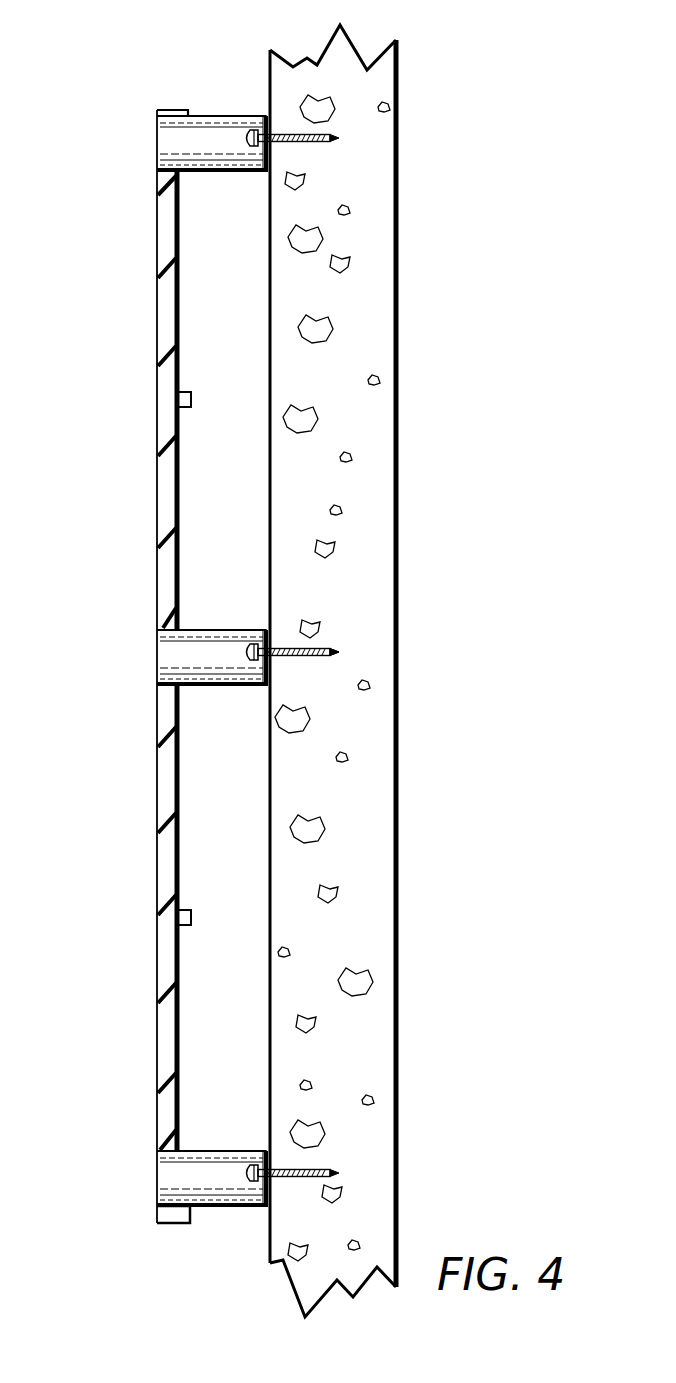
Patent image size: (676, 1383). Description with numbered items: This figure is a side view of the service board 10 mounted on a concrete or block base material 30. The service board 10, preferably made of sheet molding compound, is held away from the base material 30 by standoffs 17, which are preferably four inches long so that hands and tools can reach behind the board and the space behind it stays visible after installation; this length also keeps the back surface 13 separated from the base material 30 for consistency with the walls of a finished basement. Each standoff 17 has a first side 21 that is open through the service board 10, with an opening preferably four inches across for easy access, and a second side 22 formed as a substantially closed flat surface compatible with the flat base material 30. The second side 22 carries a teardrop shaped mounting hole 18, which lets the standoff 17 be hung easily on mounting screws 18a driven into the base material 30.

The service board 10 is at (153, 440).
The back surface 13 is at (180, 945).
The standoffs 17 is at (197, 176).
The teardrop shaped mounting hole 18 is at (268, 666).
The mounting screws 18a is at (318, 640).
The first side 21 is at (157, 96).
The second side 22 is at (270, 116).
The base material 30 is at (377, 232).